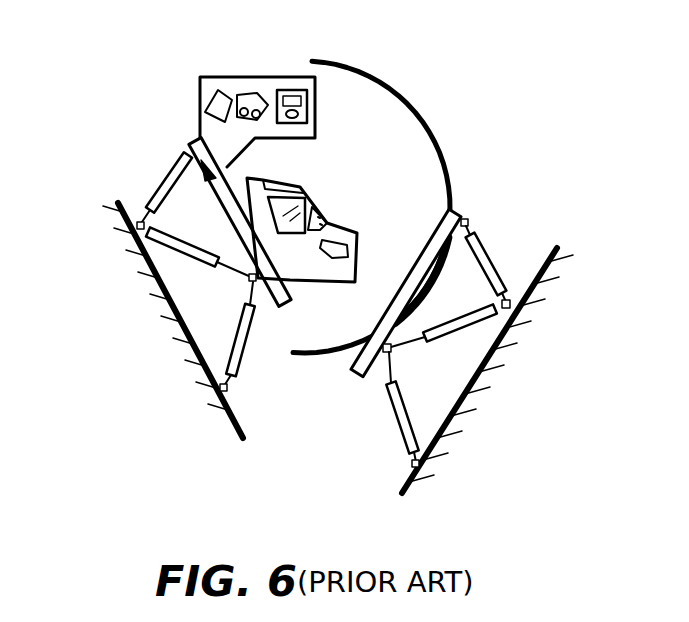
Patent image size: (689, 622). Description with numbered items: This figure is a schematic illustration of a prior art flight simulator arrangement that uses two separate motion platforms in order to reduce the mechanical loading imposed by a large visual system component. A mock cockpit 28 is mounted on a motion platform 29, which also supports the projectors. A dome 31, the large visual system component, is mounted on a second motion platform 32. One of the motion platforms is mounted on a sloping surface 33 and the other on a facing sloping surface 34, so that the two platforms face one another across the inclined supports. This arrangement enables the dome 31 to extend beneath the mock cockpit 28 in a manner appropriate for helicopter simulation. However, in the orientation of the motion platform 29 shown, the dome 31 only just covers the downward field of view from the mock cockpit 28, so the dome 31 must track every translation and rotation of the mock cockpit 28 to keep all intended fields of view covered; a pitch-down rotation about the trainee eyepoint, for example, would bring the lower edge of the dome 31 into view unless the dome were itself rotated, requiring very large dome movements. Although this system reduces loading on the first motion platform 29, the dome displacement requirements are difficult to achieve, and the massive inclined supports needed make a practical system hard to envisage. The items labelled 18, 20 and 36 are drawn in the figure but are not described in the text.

The display screen 18 is at (597, 21).
The projection dome 20 is at (440, 21).
The mock cockpit 28 is at (310, 255).
The motion platform 29 is at (185, 153).
The dome 31 is at (428, 128).
The second motion platform 32 is at (418, 268).
The sloping surface 33 is at (162, 326).
The facing sloping surface 34 is at (503, 347).
The control console 36 is at (260, 100).